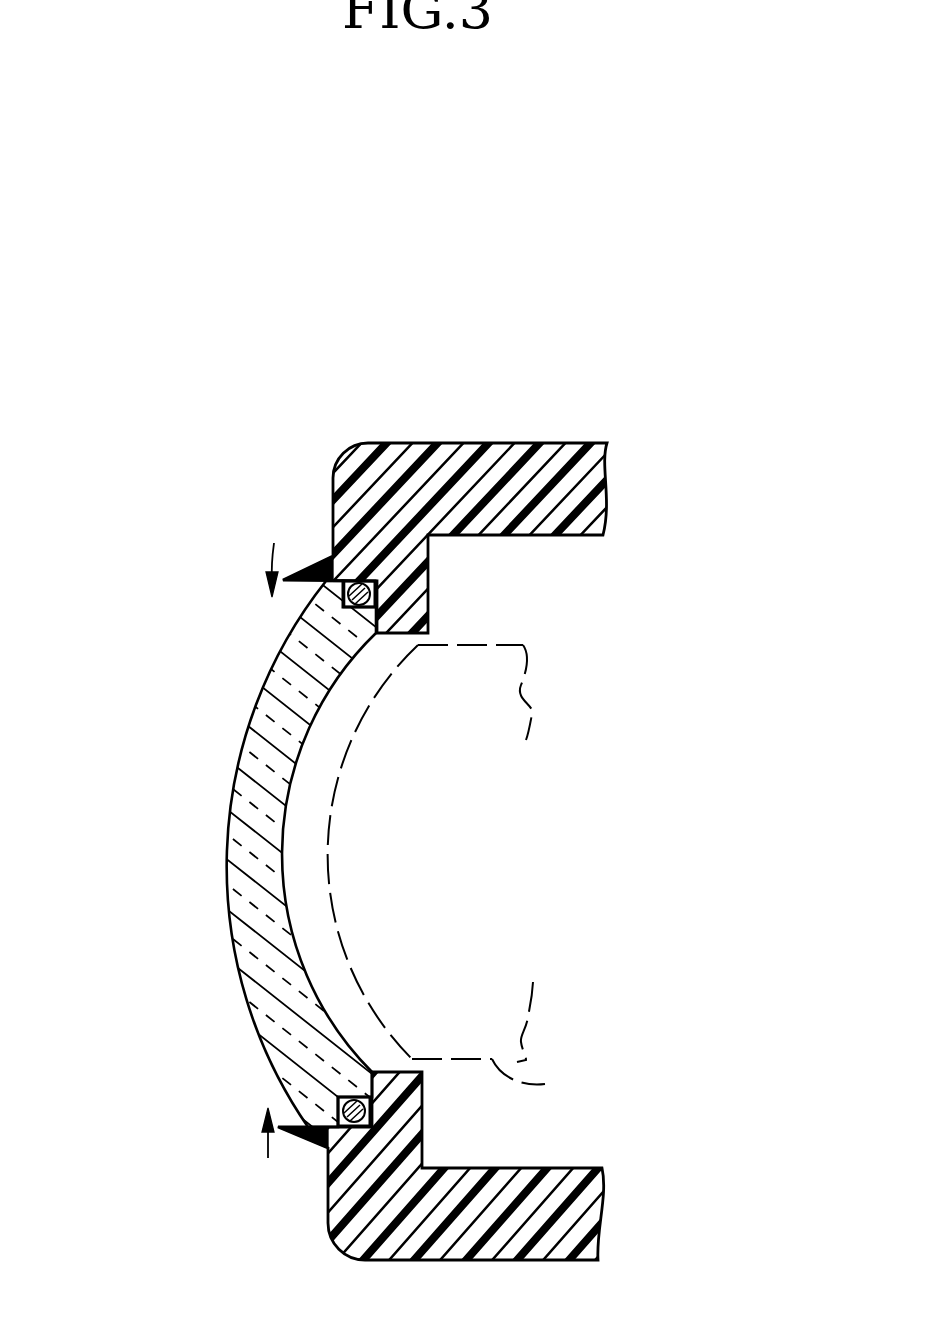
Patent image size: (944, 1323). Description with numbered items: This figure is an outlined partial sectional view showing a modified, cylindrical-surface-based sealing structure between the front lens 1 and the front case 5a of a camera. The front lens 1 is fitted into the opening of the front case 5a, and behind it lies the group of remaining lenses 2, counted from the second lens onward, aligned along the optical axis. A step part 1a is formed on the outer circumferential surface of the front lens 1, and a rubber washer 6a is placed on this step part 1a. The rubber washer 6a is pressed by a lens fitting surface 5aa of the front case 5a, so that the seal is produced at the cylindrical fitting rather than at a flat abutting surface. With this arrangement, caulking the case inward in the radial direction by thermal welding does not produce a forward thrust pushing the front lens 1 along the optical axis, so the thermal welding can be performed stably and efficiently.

The front lens 1 is at (247, 993).
The step part 1a is at (333, 607).
The group of remaining lenses 2 is at (545, 1084).
The front case 5a is at (553, 443).
The lens fitting surface 5aa is at (330, 1122).
The rubber washer 6a is at (360, 581).